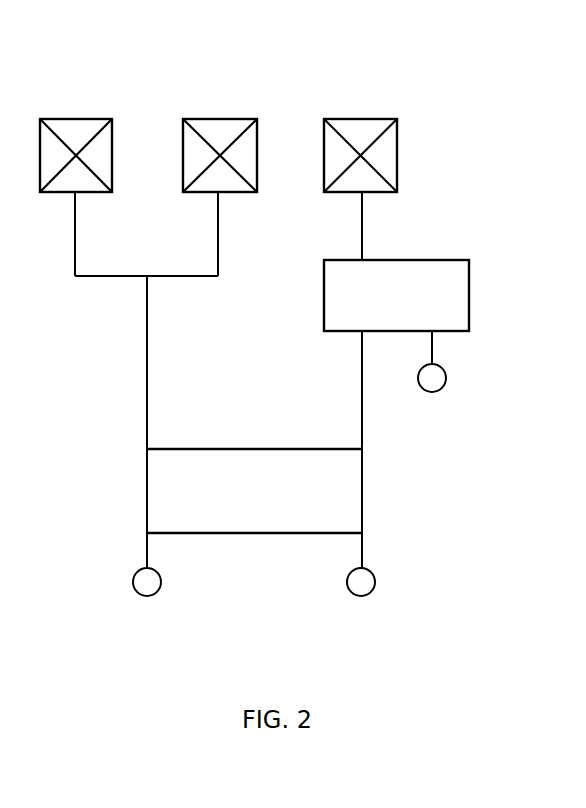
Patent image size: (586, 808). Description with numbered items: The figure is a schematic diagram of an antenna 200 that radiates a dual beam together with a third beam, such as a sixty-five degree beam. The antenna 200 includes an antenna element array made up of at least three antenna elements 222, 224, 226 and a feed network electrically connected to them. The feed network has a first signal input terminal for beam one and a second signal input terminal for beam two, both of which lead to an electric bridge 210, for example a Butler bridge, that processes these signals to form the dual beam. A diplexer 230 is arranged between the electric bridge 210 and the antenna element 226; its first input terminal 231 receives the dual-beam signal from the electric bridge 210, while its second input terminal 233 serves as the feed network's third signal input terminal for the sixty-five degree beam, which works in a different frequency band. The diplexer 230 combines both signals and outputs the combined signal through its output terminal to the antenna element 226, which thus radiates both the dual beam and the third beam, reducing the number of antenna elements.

The antenna 200 is at (350, 75).
The antenna element 222 is at (73, 133).
The antenna element 224 is at (225, 133).
The antenna element 226 is at (377, 155).
The diplexer 230 is at (396, 295).
The first input terminal 231 is at (362, 350).
The second input terminal 233 is at (432, 348).
The electric bridge 210 is at (327, 515).